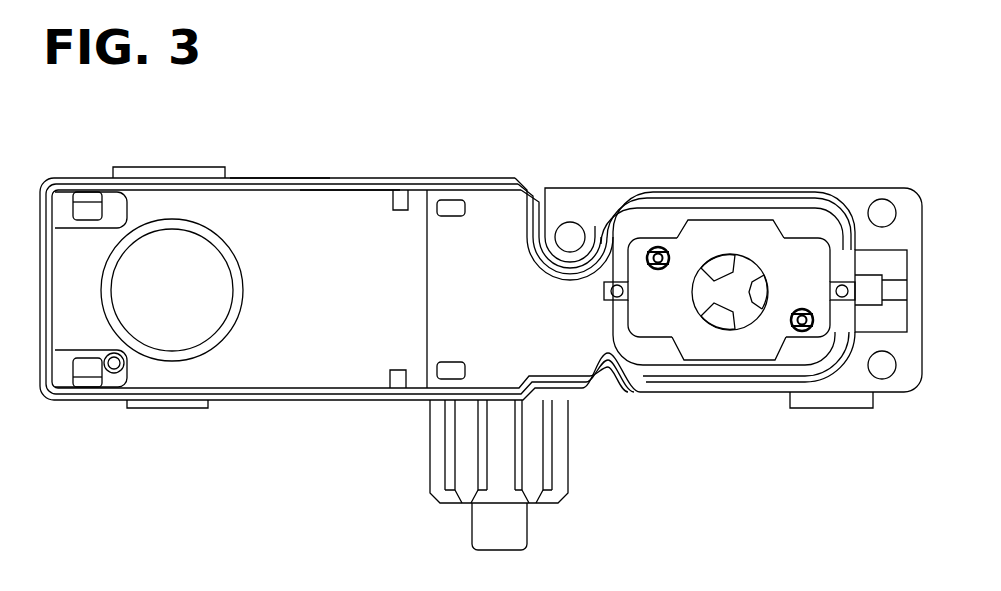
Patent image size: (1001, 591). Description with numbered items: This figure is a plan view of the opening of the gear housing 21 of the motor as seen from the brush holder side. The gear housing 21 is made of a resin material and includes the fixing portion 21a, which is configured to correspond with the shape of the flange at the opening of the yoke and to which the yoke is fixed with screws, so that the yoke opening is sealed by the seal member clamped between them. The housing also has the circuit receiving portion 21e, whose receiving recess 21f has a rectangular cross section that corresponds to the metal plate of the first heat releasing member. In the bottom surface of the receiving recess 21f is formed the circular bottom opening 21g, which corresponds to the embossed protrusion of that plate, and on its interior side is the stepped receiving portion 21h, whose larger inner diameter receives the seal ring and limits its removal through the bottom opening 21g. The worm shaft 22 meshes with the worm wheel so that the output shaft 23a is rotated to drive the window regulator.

The gear housing 21 is at (570, 188).
The fixing portion 21a is at (858, 192).
The circuit receiving portion 21e is at (280, 180).
The receiving recess 21f is at (345, 195).
The bottom opening 21g is at (196, 340).
The stepped receiving portion 21h is at (232, 310).
The worm shaft 22 is at (745, 292).
The output shaft 23a is at (520, 532).